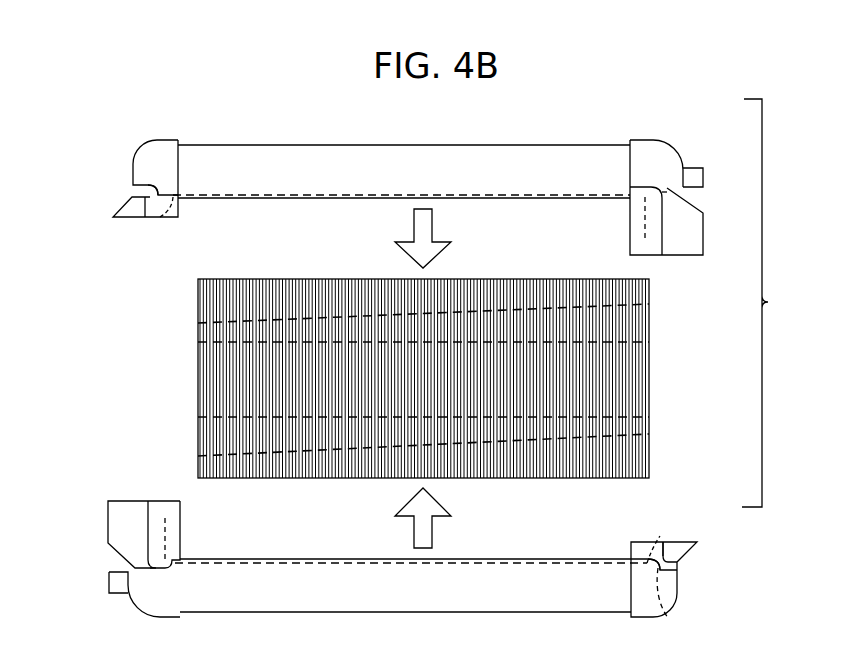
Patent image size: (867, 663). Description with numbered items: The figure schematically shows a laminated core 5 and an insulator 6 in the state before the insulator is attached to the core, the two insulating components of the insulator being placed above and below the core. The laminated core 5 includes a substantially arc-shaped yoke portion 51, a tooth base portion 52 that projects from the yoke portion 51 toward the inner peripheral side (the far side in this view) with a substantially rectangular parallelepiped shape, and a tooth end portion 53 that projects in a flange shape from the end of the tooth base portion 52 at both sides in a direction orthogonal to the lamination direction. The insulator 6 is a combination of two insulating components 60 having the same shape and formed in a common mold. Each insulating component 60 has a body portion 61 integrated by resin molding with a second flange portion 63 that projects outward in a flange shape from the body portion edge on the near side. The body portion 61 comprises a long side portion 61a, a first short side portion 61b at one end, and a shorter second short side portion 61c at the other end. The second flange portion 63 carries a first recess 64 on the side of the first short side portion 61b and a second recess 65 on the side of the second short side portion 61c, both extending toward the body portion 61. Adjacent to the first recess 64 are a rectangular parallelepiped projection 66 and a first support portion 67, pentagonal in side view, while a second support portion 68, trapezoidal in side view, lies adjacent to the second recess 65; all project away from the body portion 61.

The laminated core 5 is at (665, 379).
The yoke portion 51 is at (552, 296).
The tooth base portion 52 is at (610, 341).
The tooth end portion 53 is at (608, 303).
The insulator 6 is at (763, 303).
The insulating component 60 is at (691, 156).
The body portion 61 is at (143, 187).
The long side portion 61a is at (338, 195).
The first short side portion 61b is at (645, 240).
The second short side portion 61c is at (158, 221).
The second flange portion 63 is at (576, 144).
The first recess 64 is at (670, 189).
The second recess 65 is at (148, 191).
The projection 66 is at (703, 178).
The first support portion 67 is at (703, 237).
The second support portion 68 is at (128, 205).